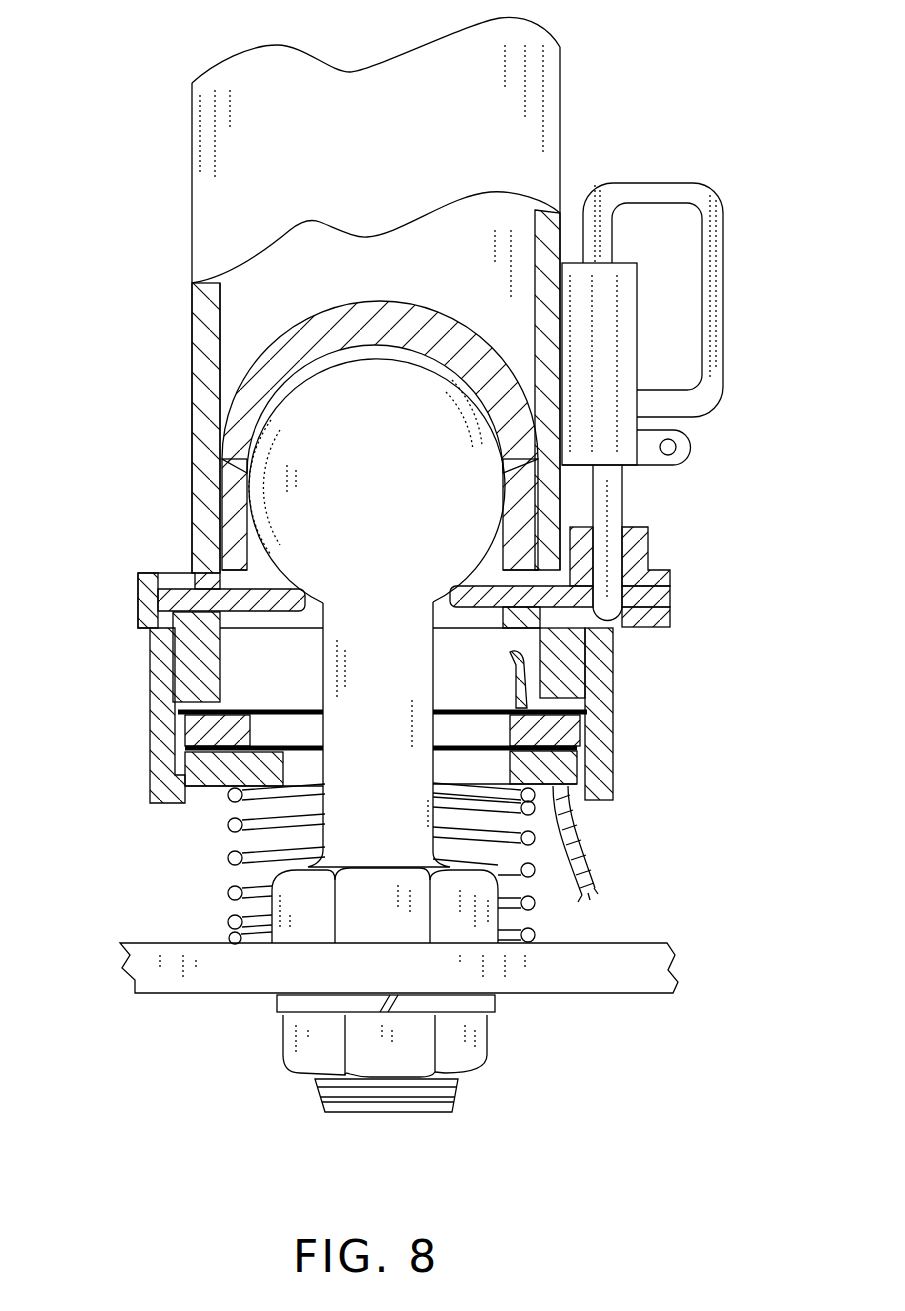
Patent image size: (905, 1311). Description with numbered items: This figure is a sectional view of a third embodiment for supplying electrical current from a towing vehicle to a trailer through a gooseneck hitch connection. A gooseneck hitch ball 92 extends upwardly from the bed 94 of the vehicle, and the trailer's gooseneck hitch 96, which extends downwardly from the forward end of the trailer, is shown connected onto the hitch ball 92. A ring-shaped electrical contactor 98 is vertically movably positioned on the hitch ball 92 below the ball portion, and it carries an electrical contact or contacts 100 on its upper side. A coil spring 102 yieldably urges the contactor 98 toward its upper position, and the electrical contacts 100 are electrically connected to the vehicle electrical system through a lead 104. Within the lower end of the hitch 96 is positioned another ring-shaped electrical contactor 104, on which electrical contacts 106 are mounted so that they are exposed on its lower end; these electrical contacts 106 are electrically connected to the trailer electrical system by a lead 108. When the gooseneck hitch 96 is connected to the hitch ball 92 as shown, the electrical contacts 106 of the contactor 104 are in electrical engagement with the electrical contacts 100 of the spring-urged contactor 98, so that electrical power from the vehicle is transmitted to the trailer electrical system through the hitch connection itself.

The gooseneck hitch ball 92 is at (338, 478).
The bed 94 is at (620, 940).
The gooseneck hitch 96 is at (190, 153).
The ring-shaped electrical contactor 98 is at (557, 768).
The electrical contacts 100 is at (185, 770).
The coil spring 102 is at (228, 856).
The ring-shaped electrical contactor 104 is at (563, 717).
The electrical contacts 106 is at (150, 692).
The lead 108 is at (533, 680).